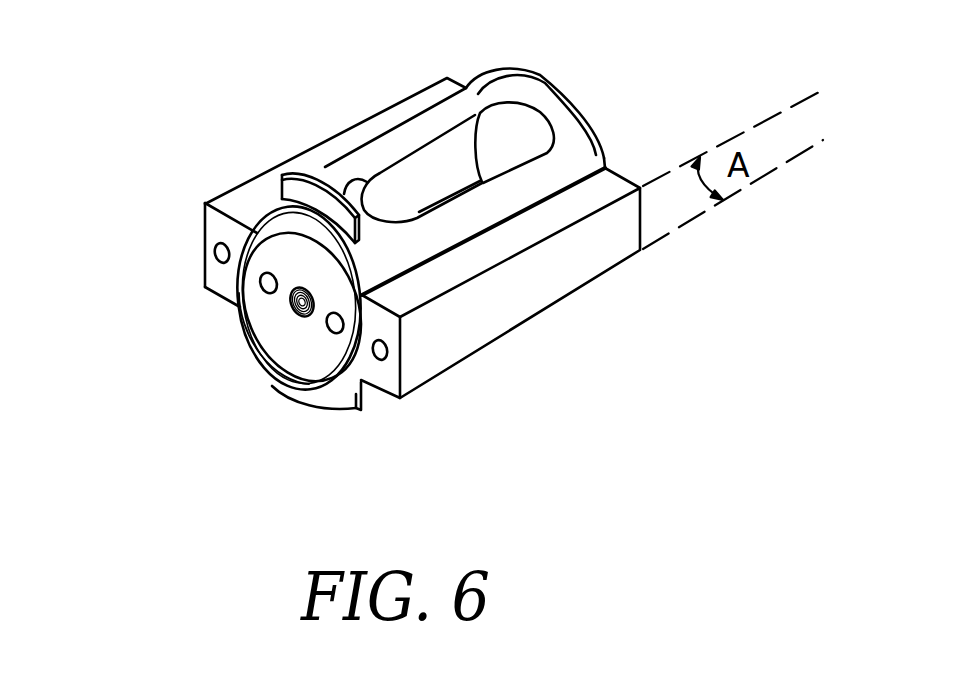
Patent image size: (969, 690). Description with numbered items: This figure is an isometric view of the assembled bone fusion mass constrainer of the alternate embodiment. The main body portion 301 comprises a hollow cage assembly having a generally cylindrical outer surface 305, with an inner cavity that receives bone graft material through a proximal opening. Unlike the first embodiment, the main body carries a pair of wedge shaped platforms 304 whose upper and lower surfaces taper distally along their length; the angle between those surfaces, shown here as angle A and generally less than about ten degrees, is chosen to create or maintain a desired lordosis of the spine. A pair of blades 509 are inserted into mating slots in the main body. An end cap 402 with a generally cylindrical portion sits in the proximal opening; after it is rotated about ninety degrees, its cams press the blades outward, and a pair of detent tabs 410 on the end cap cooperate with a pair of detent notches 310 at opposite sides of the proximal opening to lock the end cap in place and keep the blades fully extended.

The main body portion 301 is at (492, 312).
The wedge shaped platforms 304 is at (386, 118).
The generally cylindrical outer surface 305 is at (585, 143).
The detent notches 310 is at (304, 352).
The end cap 402 is at (278, 235).
The detent tabs 410 is at (300, 369).
The blades 509 is at (299, 169).